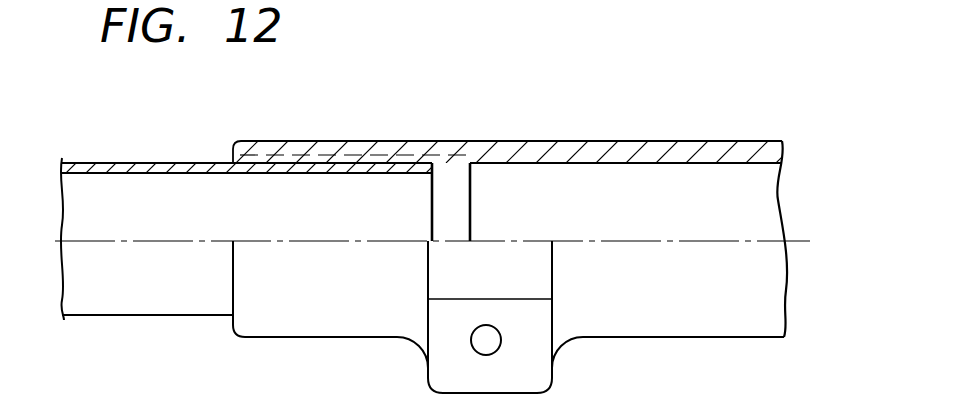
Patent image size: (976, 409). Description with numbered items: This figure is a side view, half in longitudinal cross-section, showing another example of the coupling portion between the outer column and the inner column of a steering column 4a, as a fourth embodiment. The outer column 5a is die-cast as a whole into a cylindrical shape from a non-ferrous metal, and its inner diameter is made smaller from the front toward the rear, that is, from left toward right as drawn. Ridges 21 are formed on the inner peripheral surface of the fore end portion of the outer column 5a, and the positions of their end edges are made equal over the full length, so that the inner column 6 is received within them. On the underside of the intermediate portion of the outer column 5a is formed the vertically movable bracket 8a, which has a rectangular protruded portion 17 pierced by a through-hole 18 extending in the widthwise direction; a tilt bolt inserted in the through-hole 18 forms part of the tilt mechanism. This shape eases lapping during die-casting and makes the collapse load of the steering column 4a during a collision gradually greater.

The tube 6 is at (126, 164).
The ridges 21 is at (286, 164).
The steering column 4a is at (387, 143).
The outer column 5a is at (540, 150).
The vertically movable bracket 8a is at (535, 330).
The rectangular protruded portion 17 is at (526, 375).
The through-hole 18 is at (476, 340).